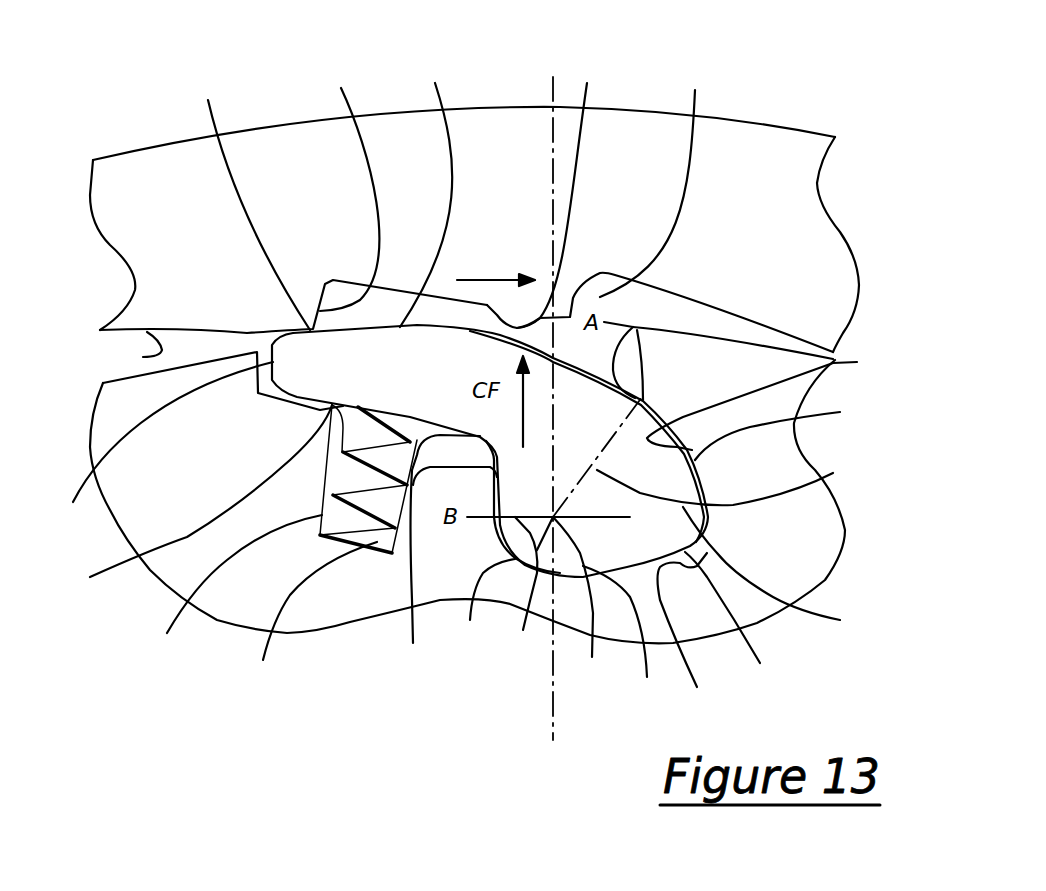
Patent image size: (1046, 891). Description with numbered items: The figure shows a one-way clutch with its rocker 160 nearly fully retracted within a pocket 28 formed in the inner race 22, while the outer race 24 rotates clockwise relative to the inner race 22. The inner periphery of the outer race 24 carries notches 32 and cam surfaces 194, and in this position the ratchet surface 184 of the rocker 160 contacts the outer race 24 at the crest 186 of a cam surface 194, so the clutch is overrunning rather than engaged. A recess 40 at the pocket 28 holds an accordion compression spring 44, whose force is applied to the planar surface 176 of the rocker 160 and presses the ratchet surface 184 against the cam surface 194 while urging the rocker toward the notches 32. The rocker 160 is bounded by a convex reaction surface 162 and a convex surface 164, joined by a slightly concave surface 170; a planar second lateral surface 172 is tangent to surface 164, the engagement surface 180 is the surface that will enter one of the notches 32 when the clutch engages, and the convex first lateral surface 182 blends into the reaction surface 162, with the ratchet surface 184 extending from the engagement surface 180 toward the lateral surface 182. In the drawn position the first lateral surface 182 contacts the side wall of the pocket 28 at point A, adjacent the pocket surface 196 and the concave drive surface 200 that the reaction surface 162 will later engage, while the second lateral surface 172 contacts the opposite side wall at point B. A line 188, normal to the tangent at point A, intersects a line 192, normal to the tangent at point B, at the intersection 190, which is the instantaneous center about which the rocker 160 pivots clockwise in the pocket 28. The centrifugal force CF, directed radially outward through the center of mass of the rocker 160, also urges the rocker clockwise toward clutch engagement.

The inner race 22 is at (814, 549).
The outer race 24 is at (641, 174).
The pocket 28 is at (733, 626).
The notch 32 is at (515, 187).
The recess 40 is at (310, 621).
The accordion compression spring 44 is at (229, 592).
The rocker 160 is at (410, 376).
The reaction surface 162 is at (784, 572).
The convex surface 164 is at (481, 605).
The concave surface 170 is at (623, 638).
The second lateral surface 172 is at (444, 556).
The planar surface 176 is at (186, 499).
The engagement surface 180 is at (186, 442).
The first lateral surface 182 is at (788, 431).
The ratchet surface 184 is at (426, 190).
The crest 186 is at (245, 203).
The line normal at point A 188 is at (738, 484).
The intersection 190 is at (581, 607).
The line normal at point B 192 is at (525, 594).
The cam surface 194 is at (110, 355).
The pocket surface 196 is at (773, 399).
The drive surface 200 is at (691, 637).